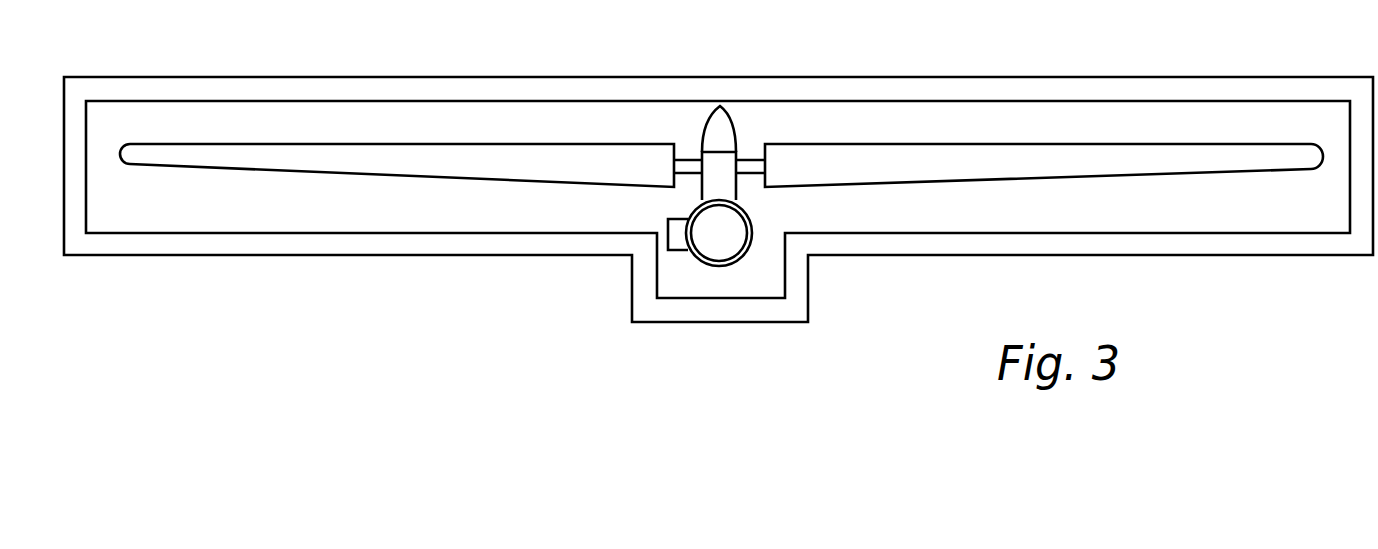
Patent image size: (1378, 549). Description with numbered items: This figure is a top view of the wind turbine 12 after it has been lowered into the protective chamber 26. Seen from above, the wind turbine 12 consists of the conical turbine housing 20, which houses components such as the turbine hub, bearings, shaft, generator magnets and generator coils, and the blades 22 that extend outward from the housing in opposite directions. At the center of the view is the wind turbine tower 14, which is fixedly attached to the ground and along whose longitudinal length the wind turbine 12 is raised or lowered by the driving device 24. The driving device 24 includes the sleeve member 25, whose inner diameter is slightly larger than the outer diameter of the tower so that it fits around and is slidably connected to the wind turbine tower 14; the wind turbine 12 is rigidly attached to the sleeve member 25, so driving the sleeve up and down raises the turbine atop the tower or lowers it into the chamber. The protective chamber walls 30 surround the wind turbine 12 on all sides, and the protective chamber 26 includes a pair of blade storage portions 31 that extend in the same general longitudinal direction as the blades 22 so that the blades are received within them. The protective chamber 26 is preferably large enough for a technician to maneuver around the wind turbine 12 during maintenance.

The wind turbine 12 is at (703, 114).
The wind turbine tower 14 is at (747, 243).
The conical turbine housing 20 is at (733, 128).
The blades 22 is at (418, 166).
The driving device 24 is at (677, 240).
The sleeve member 25 is at (737, 262).
The protective chamber 26 is at (531, 265).
The protective chamber walls 30 is at (394, 83).
The blade storage portions 31 is at (271, 188).